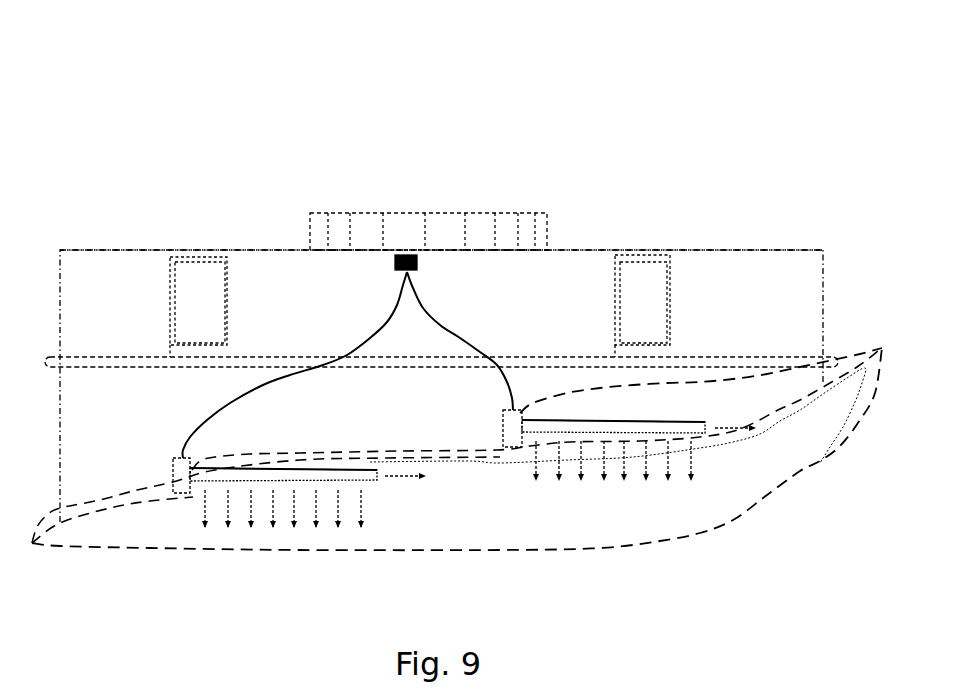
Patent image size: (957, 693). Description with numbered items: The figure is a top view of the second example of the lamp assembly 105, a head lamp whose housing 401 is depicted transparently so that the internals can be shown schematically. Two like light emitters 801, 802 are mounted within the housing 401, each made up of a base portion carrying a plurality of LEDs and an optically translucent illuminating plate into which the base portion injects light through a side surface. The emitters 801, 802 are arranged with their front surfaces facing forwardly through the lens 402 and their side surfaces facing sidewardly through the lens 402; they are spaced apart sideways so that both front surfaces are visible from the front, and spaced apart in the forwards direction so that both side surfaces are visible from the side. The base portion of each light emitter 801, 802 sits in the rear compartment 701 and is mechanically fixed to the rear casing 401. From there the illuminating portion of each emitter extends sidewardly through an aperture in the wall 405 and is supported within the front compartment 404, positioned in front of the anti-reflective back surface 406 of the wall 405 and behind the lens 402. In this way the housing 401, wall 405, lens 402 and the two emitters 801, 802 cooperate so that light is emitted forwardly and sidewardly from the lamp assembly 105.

The lamp assembly 105 is at (705, 88).
The housing 401 is at (741, 246).
The lens 402 is at (813, 461).
The wall 405 is at (697, 383).
The rear compartment 701 is at (464, 374).
The front compartment 404 is at (448, 487).
The anti-reflective back surface 406 is at (468, 476).
The light emitter 801 is at (278, 572).
The light emitter 802 is at (598, 527).